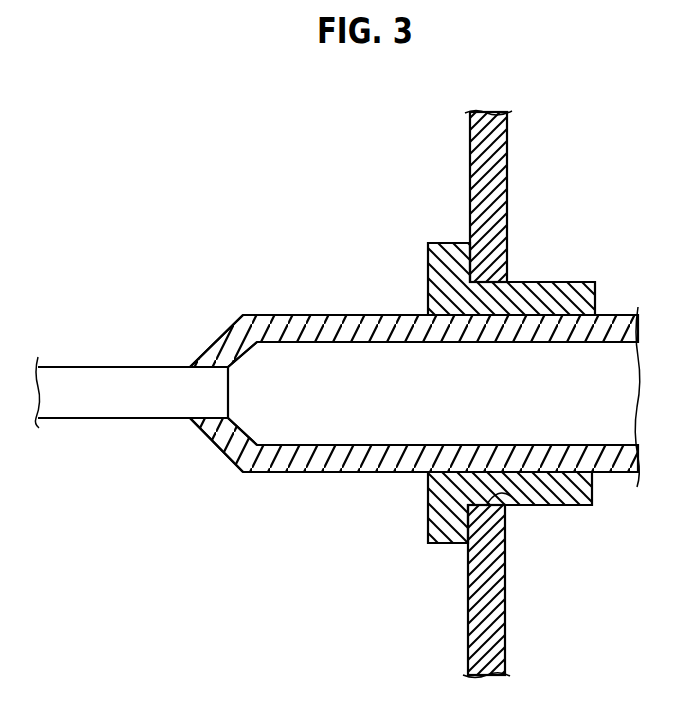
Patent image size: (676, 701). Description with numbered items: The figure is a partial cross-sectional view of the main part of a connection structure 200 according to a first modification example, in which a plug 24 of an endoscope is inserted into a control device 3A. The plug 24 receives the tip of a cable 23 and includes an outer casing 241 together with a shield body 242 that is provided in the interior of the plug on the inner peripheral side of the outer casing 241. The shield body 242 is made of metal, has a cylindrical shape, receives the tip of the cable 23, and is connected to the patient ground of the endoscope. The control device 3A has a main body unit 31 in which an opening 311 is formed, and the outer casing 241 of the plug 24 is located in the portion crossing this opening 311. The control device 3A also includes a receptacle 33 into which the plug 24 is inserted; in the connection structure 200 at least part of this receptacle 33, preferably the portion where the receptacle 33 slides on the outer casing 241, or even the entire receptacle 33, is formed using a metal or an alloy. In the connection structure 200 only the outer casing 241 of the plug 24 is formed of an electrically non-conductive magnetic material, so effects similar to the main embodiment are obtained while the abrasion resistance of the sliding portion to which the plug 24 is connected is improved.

The connection structure 200 is at (370, 152).
The cable 23 is at (108, 367).
The plug 24 is at (313, 312).
The outer casing 241 is at (210, 428).
The shield body 242 is at (362, 413).
The control device 3A is at (575, 197).
The main body unit 31 is at (507, 212).
The receptacle 33 is at (533, 282).
The opening 311 is at (512, 497).